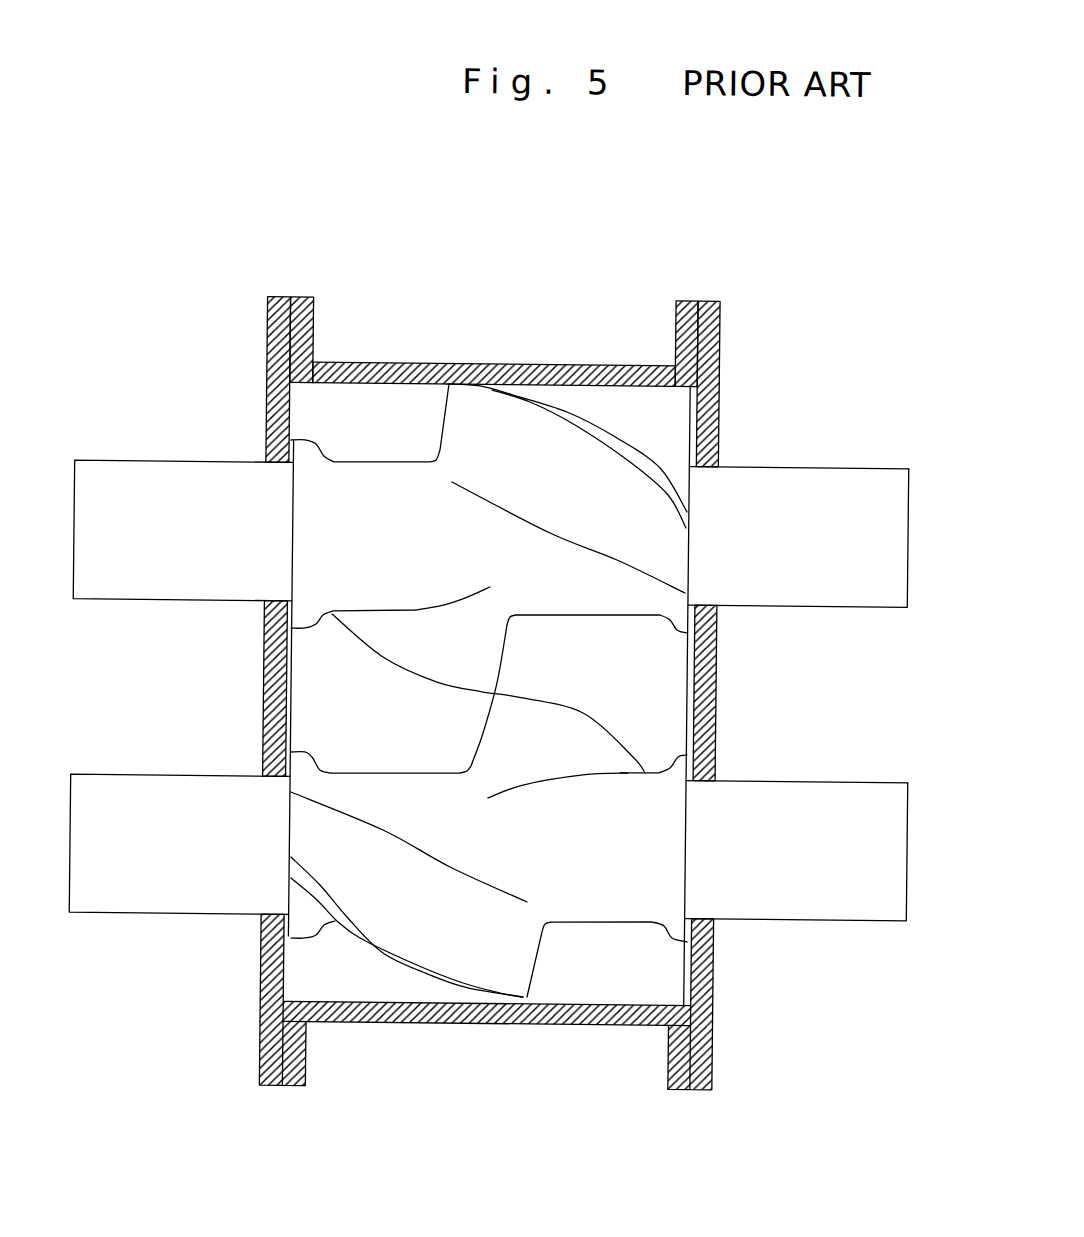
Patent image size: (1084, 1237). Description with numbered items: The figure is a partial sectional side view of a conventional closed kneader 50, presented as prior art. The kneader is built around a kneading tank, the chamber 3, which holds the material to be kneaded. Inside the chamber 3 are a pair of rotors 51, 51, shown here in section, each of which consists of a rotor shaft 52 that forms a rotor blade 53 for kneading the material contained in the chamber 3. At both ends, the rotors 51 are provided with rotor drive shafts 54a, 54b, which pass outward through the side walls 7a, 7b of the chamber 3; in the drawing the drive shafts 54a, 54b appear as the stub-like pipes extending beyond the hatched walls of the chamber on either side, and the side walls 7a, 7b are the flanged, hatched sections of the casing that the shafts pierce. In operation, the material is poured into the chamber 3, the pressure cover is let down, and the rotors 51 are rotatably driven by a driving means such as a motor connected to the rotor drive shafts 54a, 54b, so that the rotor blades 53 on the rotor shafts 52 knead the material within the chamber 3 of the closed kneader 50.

The chamber 3 is at (390, 364).
The closed kneader 50 is at (713, 297).
The rotor 51 is at (770, 460).
The rotor shaft 52 is at (521, 557).
The rotor blade 53 is at (507, 415).
The rotor drive shaft 54a is at (812, 516).
The rotor drive shaft 54b is at (161, 533).
The side wall 7a is at (716, 1061).
The side wall 7b is at (262, 1050).